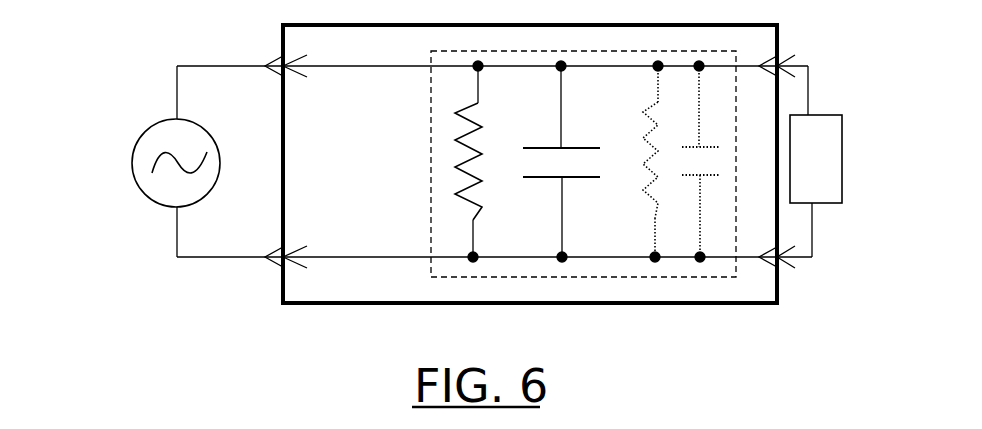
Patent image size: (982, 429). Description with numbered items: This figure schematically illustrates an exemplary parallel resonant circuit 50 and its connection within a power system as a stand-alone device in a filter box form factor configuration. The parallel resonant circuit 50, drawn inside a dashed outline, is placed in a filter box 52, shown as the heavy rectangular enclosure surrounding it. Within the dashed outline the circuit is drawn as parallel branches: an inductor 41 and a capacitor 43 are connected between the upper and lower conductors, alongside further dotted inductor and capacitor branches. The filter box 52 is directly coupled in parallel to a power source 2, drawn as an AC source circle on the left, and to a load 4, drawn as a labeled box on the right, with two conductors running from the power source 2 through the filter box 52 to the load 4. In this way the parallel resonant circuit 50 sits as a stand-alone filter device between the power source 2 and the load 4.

The power source 2 is at (148, 152).
The load 4 is at (828, 133).
The inductor 41 is at (473, 157).
The capacitor 43 is at (570, 163).
The parallel resonant circuit 50 is at (432, 190).
The filter box 52 is at (535, 304).